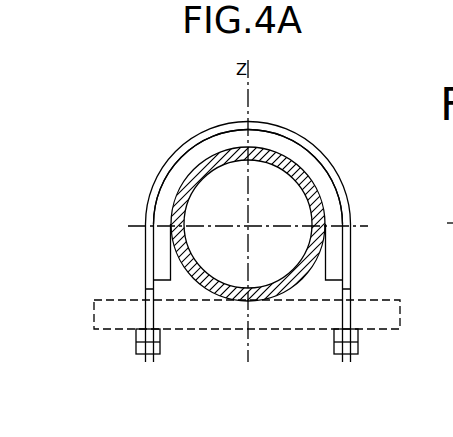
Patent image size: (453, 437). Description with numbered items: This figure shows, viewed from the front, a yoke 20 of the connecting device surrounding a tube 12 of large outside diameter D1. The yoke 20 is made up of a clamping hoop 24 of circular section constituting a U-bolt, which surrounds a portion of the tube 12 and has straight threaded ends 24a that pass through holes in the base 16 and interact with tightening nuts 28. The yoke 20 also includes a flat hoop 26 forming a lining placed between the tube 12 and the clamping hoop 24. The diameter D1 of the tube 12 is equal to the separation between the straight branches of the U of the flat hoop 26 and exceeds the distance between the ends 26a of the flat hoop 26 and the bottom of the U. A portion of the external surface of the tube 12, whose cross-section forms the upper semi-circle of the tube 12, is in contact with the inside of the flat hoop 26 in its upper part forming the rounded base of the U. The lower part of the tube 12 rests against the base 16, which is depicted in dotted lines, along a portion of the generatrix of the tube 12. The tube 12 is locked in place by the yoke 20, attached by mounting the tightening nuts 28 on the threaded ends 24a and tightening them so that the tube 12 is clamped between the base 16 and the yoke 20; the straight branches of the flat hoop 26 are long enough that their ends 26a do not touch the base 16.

The tube 12 is at (293, 193).
The base 16 is at (130, 307).
The yoke 20 is at (150, 124).
The clamping hoop 24 is at (262, 122).
The threaded ends 24a is at (348, 315).
The flat hoop 26 is at (220, 142).
The ends of the flat hoop 26a is at (333, 272).
The tightening nuts 28 is at (138, 337).
The tube diameter D1 is at (290, 288).